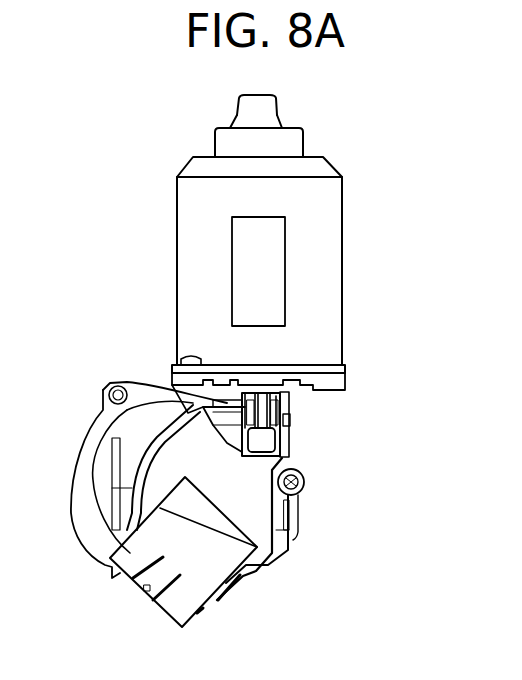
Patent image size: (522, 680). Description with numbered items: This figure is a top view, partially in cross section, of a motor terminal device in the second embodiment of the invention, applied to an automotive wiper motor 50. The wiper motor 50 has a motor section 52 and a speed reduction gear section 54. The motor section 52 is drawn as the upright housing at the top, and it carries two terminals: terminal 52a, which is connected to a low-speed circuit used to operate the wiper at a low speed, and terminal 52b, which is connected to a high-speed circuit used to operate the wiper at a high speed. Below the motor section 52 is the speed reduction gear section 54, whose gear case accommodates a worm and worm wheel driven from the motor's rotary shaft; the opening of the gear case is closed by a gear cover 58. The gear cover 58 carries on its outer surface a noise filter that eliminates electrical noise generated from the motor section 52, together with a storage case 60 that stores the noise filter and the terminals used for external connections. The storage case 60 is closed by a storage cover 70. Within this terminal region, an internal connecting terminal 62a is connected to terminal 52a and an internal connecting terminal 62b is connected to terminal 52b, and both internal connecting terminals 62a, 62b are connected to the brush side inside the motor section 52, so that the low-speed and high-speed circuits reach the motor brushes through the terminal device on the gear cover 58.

The wiper motor 50 is at (312, 128).
The motor section 52 is at (342, 228).
The terminal 52a is at (283, 410).
The terminal 52b is at (262, 400).
The speed reduction gear section 54 is at (77, 447).
The gear cover 58 is at (105, 515).
The storage case 60 is at (290, 442).
The internal connecting terminal 62a is at (290, 410).
The internal connecting terminal 62b is at (222, 406).
The storage cover 70 is at (290, 532).